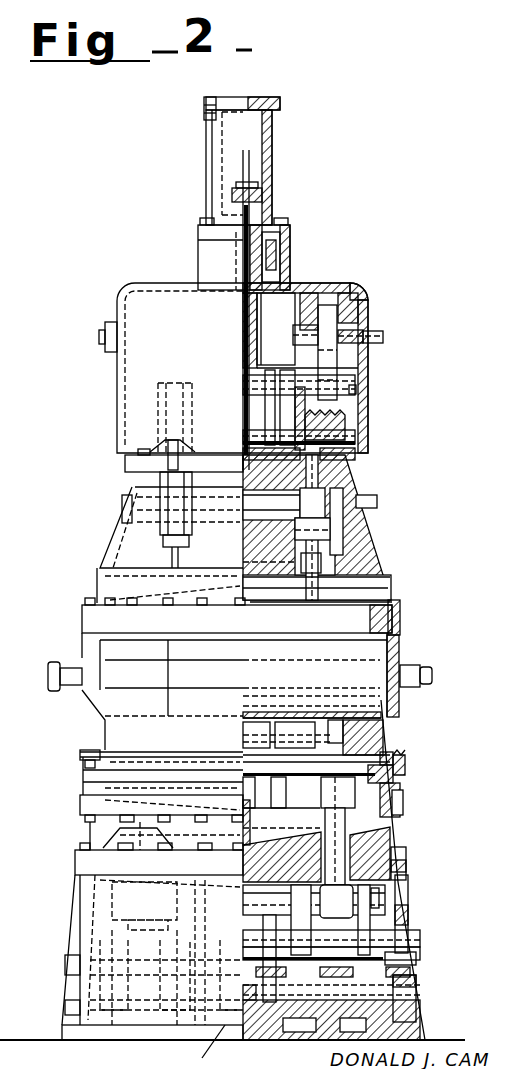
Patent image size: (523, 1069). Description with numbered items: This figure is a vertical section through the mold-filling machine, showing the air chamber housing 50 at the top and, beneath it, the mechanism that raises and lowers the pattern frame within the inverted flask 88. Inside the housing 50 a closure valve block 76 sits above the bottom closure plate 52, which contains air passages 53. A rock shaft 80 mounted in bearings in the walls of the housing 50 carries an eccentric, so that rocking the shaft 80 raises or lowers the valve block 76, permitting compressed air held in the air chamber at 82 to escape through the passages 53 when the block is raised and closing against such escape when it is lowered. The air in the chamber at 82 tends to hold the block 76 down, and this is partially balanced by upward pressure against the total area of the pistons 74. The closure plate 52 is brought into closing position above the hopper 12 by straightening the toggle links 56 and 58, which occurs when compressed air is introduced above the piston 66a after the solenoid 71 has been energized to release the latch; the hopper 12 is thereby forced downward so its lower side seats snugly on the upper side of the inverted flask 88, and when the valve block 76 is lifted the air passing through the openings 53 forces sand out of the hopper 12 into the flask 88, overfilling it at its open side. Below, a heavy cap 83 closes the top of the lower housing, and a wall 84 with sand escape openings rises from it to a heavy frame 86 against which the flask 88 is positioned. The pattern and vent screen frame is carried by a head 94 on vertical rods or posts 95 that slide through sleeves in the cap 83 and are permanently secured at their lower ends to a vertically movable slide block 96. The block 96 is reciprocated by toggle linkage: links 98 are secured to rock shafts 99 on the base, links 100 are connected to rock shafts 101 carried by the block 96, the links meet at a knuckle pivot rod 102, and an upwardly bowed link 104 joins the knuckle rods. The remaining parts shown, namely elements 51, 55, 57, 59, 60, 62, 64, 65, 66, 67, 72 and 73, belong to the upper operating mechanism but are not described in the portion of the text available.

The hopper 12 is at (399, 650).
The air chamber housing 50 is at (362, 548).
The plate 51 is at (243, 455).
The closure plate 52 is at (400, 622).
The air passages 53 is at (292, 622).
The housing cover 55 is at (312, 302).
The toggle link 56 is at (345, 418).
The shaft 57 is at (355, 437).
The toggle link 58 is at (340, 363).
The drive shaft 59 is at (368, 322).
The bearing 60 is at (357, 389).
The plate 62 is at (268, 412).
The rod 64 is at (246, 312).
The cylinder 65 is at (266, 163).
The block 66 is at (286, 255).
The piston 66a is at (252, 203).
The rod 67 is at (158, 448).
The solenoid 71 is at (170, 300).
The piston 72 is at (246, 537).
The rod 73 is at (330, 557).
The pistons 74 is at (335, 530).
The closure valve block 76 is at (348, 603).
The rock shaft 80 is at (377, 502).
The air chamber 82 is at (368, 582).
The cap 83 is at (268, 852).
The wall 84 is at (392, 835).
The frame 86 is at (398, 790).
The flask 88 is at (372, 747).
The head 94 is at (288, 795).
The vertical rods or posts 95 is at (403, 818).
The slide block 96 is at (406, 865).
The links 98 is at (420, 957).
The rock shafts 99 is at (417, 978).
The links 100 is at (355, 925).
The rock shafts 101 is at (380, 899).
The knuckle pivot rod 102 is at (390, 958).
The link 104 is at (271, 998).